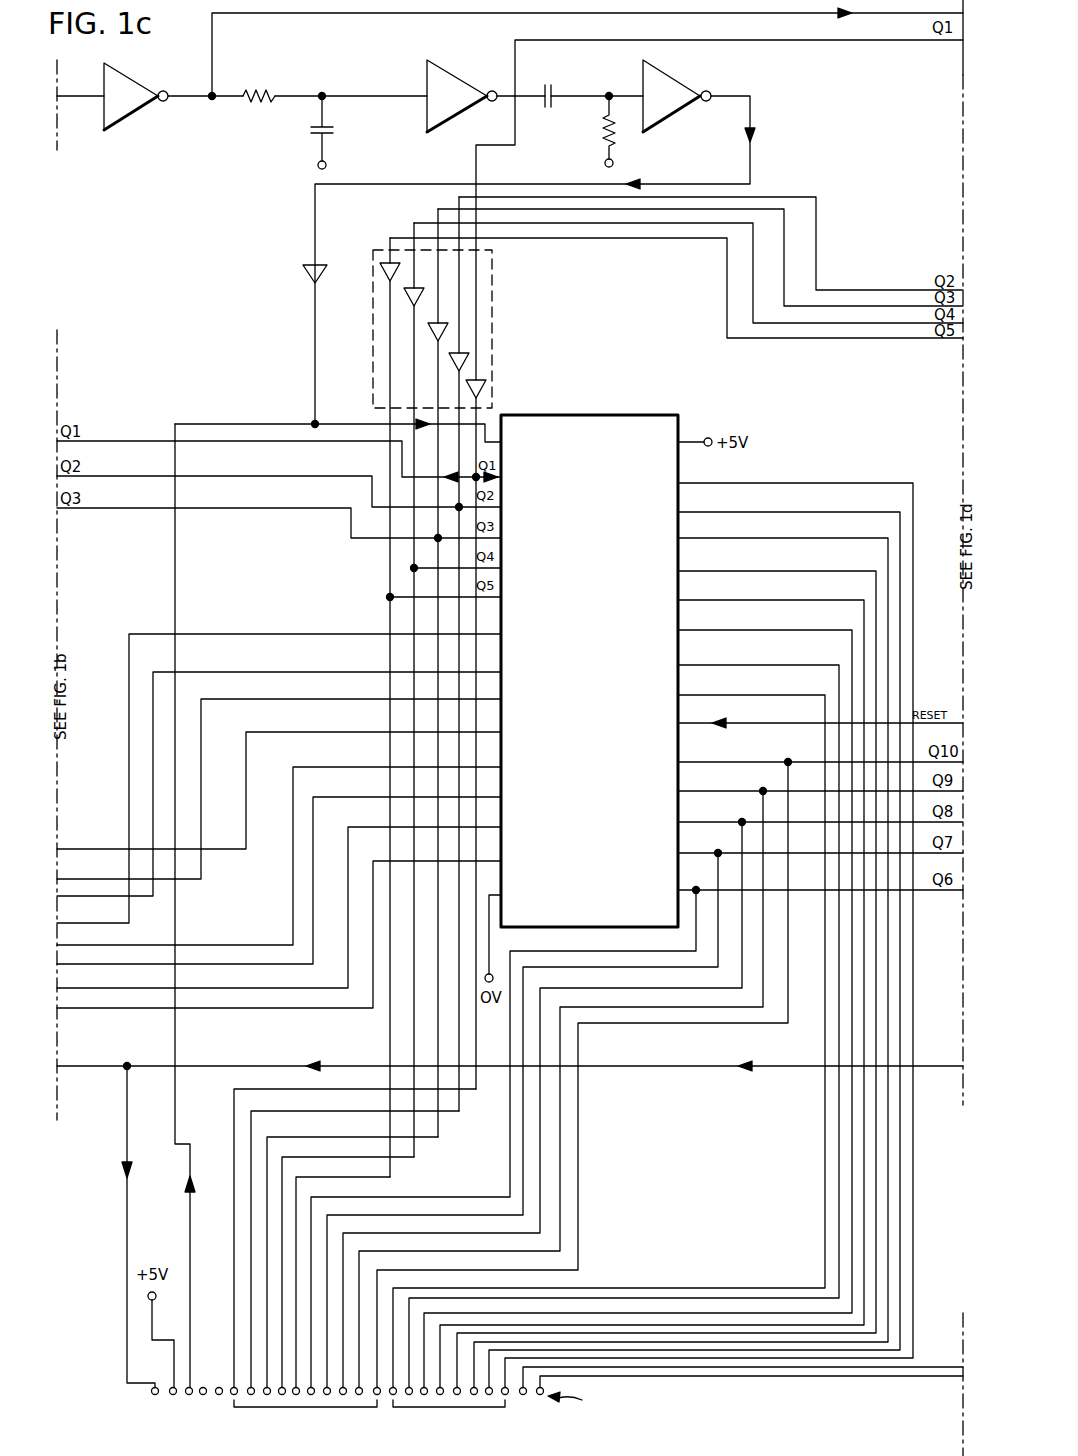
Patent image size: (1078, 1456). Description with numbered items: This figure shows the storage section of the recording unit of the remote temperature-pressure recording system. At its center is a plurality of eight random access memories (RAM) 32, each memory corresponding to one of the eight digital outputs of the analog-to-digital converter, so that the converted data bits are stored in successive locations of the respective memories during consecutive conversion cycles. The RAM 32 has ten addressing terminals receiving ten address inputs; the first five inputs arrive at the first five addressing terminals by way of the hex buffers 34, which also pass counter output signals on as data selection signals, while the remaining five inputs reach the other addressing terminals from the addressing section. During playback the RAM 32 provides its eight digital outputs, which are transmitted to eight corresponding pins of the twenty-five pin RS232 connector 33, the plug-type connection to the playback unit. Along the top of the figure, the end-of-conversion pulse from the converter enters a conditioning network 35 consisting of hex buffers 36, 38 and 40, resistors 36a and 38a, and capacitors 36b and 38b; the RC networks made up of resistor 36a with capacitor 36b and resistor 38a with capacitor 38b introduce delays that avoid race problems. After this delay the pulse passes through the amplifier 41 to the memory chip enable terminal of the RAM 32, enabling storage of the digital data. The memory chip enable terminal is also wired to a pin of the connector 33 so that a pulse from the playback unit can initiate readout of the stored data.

The random access memories (RAM) 32 is at (678, 417).
The 25-pin RS232 connector 33 is at (92, 1402).
The hex buffers 34 is at (492, 290).
The conditioning network 35 is at (732, 88).
The hex buffer 36 is at (118, 112).
The resistor 36a is at (254, 104).
The capacitor 36b is at (335, 131).
The hex buffer 38 is at (448, 112).
The resistor 38a is at (602, 128).
The capacitor 38b is at (548, 85).
The hex buffer 40 is at (660, 112).
The amplifier 41 is at (310, 277).